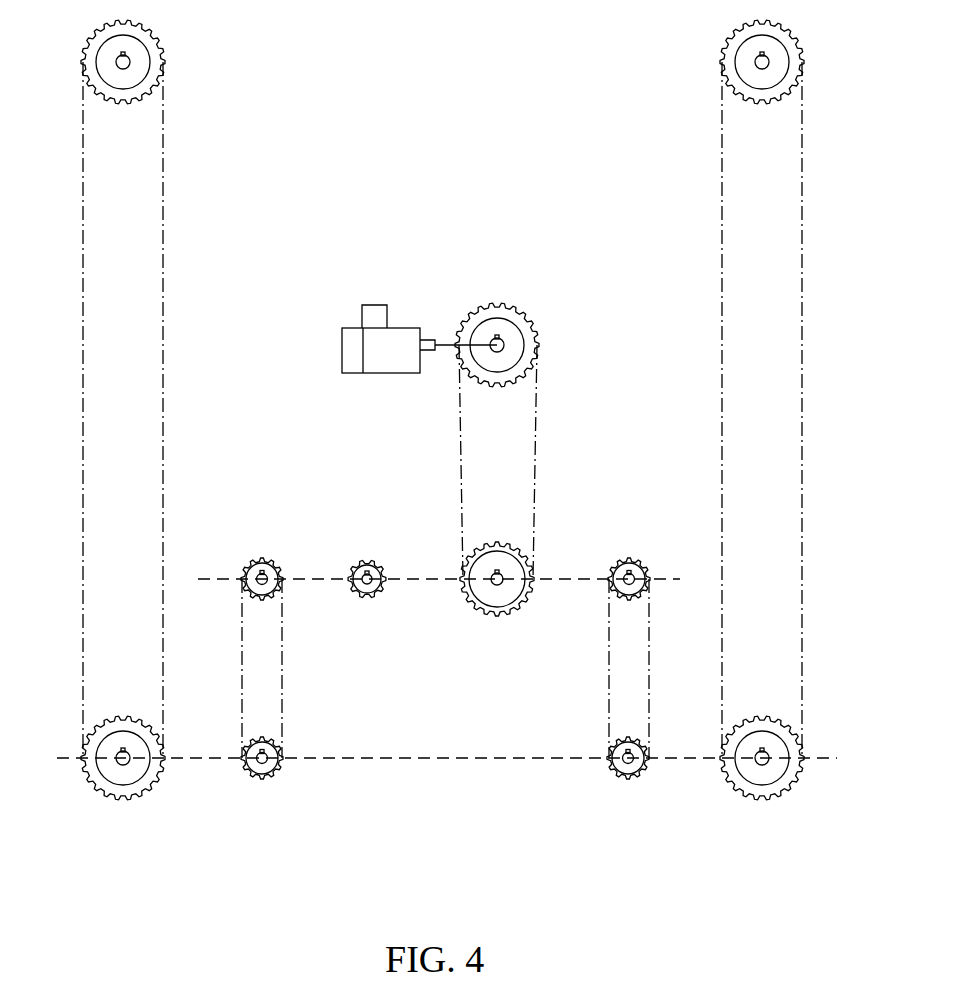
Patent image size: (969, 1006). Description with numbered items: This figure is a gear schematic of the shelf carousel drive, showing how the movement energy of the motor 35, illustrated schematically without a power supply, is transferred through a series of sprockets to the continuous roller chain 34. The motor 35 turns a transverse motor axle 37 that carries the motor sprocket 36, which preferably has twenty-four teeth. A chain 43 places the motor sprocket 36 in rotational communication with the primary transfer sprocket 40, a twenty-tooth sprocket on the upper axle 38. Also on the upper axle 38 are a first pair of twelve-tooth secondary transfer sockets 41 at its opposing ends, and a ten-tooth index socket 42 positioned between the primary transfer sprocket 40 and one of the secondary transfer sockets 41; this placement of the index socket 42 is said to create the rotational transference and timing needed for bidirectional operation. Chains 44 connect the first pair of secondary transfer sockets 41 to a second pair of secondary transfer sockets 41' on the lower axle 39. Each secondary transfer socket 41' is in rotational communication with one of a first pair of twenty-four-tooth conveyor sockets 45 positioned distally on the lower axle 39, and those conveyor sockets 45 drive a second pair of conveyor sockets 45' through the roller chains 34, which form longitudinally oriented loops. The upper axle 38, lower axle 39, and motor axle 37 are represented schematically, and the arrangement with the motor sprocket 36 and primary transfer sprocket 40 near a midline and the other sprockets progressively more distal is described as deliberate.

The continuous roller chain 34 is at (84, 386).
The motor 35 is at (351, 329).
The motor sprocket 36 is at (522, 332).
The motor axle 37 is at (445, 344).
The upper axle 38 is at (562, 582).
The lower axle 39 is at (362, 760).
The primary transfer sprocket 40 is at (497, 558).
The secondary transfer sockets 41 is at (447, 569).
The secondary transfer sockets 41' is at (450, 749).
The index socket 42 is at (367, 566).
The chain 43 is at (536, 428).
The chains 44 is at (283, 683).
The conveyor sockets 45 is at (443, 758).
The conveyor sockets 45' is at (461, 62).